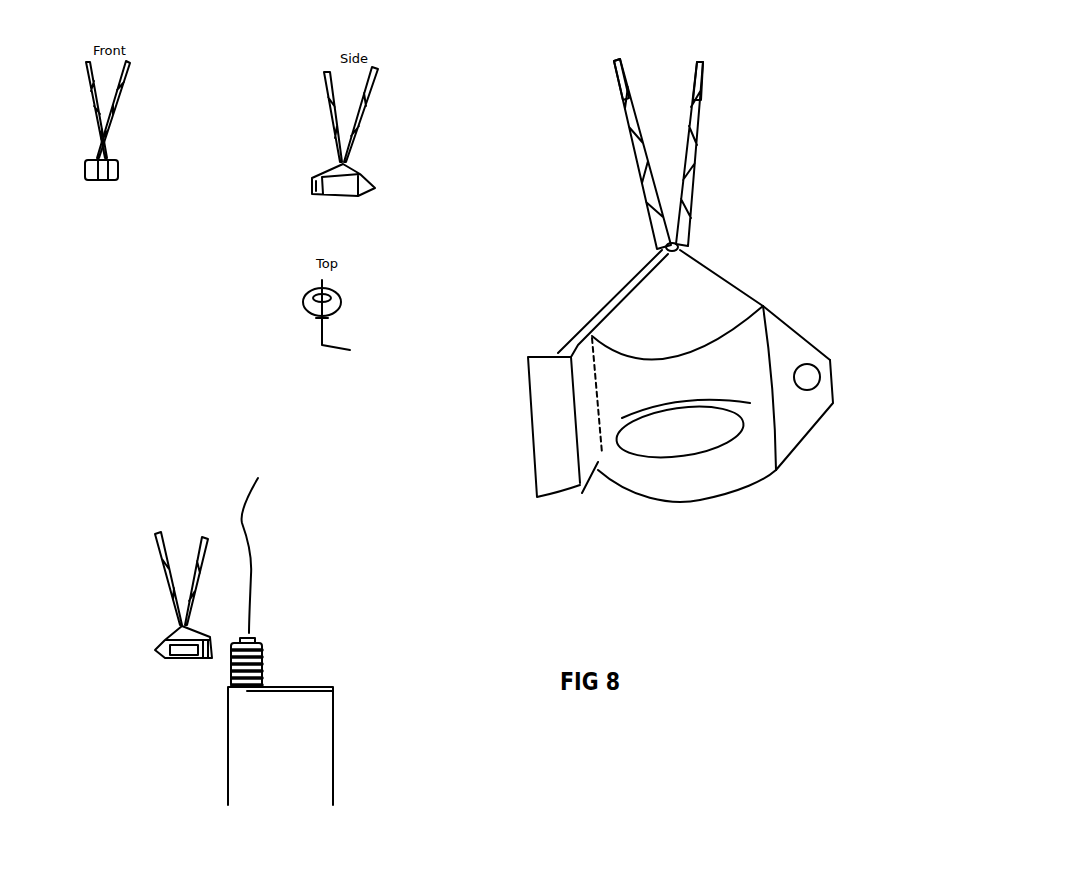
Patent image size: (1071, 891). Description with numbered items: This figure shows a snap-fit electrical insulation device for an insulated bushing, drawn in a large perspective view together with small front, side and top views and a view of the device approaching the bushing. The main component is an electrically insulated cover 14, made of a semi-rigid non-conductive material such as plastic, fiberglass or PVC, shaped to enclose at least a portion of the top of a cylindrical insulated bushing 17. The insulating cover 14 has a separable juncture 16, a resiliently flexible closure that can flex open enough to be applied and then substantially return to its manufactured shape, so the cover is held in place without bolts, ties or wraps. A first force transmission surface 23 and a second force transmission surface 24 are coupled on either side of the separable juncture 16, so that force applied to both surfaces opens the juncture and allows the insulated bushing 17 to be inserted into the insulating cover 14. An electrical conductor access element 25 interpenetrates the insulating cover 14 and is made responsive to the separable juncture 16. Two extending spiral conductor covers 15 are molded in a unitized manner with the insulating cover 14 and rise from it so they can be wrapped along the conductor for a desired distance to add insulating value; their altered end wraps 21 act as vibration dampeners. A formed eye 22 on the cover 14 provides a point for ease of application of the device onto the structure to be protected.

The insulating cover 14 is at (752, 352).
The spiral conductor cover 15 is at (637, 172).
The separable juncture 16 is at (563, 398).
The insulated bushing 17 is at (267, 662).
The altered end wraps 21 is at (615, 70).
The formed eye 22 is at (808, 372).
The first force transmission surface 23 is at (545, 353).
The second force transmission surface 24 is at (592, 453).
The electrical conductor access element 25 is at (660, 214).